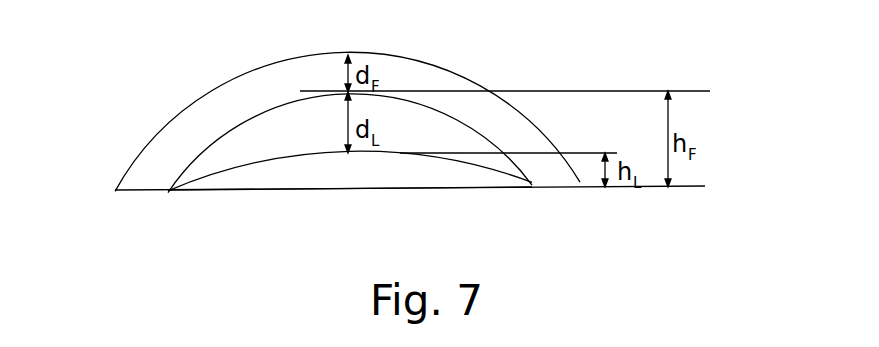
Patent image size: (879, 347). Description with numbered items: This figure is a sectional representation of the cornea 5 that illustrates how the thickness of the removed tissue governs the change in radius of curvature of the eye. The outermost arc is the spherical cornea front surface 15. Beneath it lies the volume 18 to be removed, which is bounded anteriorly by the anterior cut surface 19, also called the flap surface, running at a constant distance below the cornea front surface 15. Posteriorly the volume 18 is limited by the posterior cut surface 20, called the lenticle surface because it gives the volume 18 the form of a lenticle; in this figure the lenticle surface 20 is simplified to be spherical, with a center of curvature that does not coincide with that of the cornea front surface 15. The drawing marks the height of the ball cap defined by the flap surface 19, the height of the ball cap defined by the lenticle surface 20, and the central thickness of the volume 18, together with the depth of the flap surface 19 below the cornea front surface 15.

The cornea 5 is at (147, 85).
The cornea front surface 15 is at (470, 77).
The volume 18 is at (277, 128).
The anterior cut surface 19 is at (184, 168).
The posterior cut surface 20 is at (303, 162).